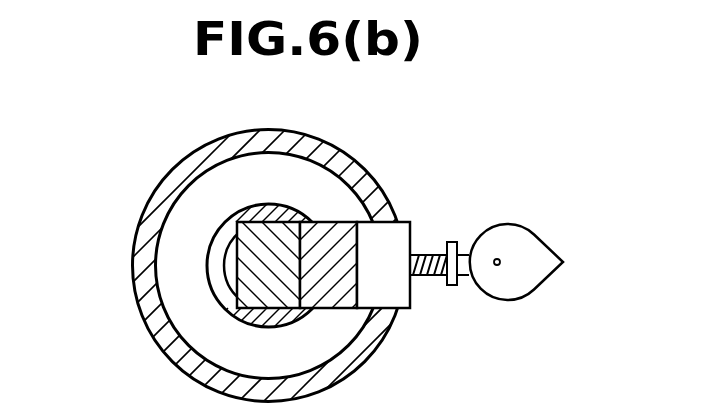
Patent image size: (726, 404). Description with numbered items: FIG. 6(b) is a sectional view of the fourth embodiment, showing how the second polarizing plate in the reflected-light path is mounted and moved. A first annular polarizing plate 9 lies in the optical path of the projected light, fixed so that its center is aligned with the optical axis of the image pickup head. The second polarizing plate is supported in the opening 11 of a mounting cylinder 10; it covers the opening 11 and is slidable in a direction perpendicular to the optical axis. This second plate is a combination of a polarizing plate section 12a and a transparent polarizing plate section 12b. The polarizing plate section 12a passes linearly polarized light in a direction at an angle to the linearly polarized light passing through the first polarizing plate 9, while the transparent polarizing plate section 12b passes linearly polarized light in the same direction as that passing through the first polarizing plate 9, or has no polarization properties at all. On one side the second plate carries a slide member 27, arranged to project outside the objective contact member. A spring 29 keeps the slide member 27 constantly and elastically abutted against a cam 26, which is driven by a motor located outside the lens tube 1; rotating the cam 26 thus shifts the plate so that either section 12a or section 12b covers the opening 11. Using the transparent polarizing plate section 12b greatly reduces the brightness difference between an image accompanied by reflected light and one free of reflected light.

The lens tube 1 is at (370, 186).
The first annular polarizing plate 9 is at (168, 233).
The mounting cylinder 10 is at (285, 217).
The opening 11 is at (230, 270).
The polarizing plate section 12a is at (262, 293).
The transparent polarizing plate section 12b is at (323, 308).
The slide member 27 is at (405, 228).
The spring 29 is at (432, 281).
The cam 26 is at (537, 242).